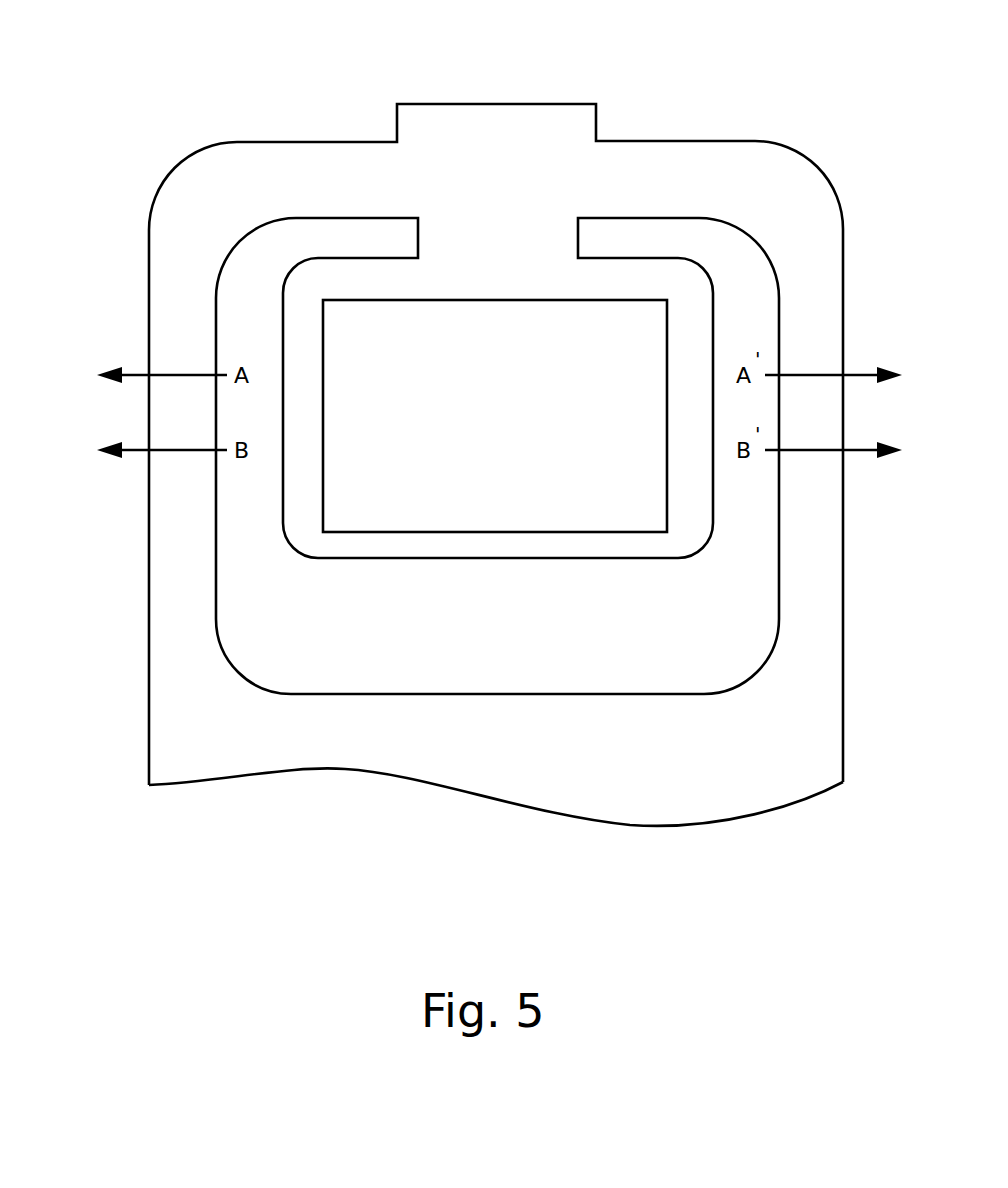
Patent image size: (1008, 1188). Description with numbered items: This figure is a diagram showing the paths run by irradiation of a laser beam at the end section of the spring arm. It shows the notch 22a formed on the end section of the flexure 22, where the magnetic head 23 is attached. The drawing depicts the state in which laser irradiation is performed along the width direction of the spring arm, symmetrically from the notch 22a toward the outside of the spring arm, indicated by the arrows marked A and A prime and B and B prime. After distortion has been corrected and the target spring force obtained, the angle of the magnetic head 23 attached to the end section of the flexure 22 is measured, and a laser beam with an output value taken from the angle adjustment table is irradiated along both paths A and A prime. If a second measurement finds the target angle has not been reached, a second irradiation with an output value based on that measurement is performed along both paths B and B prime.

The flexure 22 is at (240, 728).
The notch 22a is at (245, 584).
The magnetic head 23 is at (528, 371).